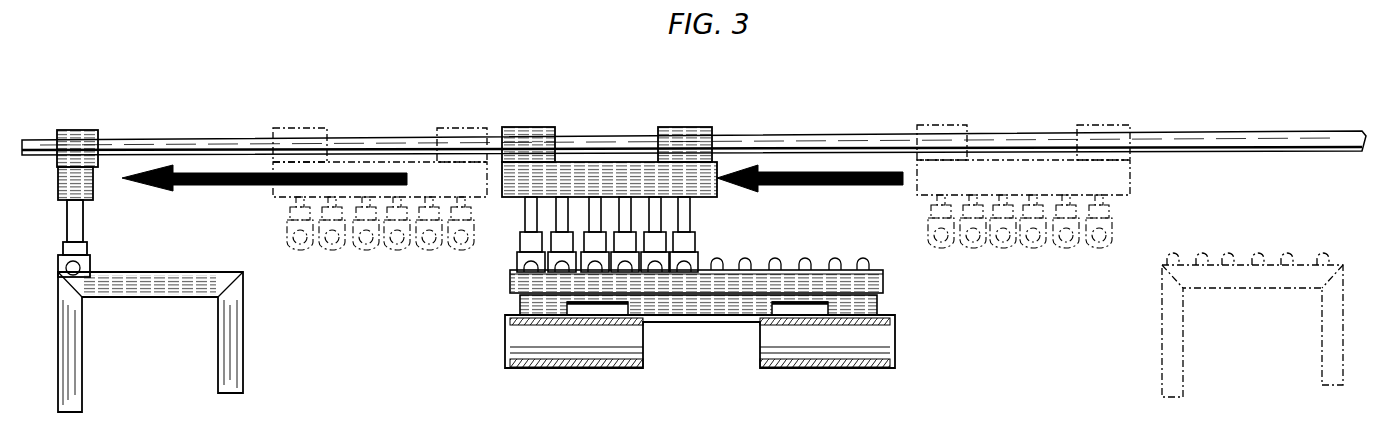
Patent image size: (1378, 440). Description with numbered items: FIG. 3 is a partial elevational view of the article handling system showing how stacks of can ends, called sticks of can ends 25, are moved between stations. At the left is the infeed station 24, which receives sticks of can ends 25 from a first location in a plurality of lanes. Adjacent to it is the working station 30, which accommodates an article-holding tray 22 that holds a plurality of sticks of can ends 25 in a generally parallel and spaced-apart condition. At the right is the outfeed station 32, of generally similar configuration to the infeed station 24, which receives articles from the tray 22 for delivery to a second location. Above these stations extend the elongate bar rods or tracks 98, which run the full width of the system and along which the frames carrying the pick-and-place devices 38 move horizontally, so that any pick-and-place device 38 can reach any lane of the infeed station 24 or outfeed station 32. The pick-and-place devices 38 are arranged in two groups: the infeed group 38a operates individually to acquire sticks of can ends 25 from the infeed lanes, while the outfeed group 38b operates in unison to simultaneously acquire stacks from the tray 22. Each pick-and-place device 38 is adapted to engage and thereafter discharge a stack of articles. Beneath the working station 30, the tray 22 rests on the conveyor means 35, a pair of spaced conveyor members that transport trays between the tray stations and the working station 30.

The article-holding tray 22 is at (867, 305).
The infeed station 24 is at (190, 219).
The sticks of can ends 25 is at (720, 262).
The working station 30 is at (827, 76).
The outfeed station 32 is at (1277, 183).
The conveyor means 35 is at (760, 367).
The pick-and-place device 38 is at (82, 237).
The infeed group of pick-and-place devices 38a is at (83, 124).
The outfeed group of pick-and-place devices 38b is at (700, 122).
The elongate bar rods or tracks 98 is at (1263, 135).